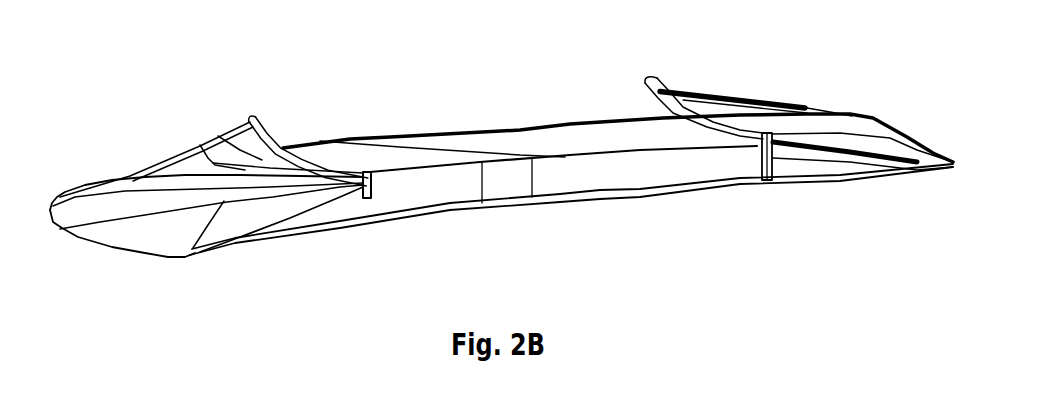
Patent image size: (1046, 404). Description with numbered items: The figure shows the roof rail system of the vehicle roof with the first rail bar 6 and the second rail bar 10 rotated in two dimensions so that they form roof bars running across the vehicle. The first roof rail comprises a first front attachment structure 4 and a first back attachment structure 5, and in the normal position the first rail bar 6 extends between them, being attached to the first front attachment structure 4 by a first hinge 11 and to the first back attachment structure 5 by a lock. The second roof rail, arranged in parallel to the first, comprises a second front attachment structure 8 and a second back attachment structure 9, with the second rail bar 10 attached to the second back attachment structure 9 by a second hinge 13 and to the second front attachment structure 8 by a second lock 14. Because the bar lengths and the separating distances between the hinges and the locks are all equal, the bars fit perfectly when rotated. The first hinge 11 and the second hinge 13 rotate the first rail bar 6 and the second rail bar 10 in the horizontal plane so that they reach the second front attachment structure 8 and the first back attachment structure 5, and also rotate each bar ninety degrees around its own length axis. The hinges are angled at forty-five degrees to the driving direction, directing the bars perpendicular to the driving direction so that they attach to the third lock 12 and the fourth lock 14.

The first front attachment structure 4 is at (347, 213).
The first back attachment structure 5 is at (813, 165).
The first rail bar 6 is at (266, 140).
The second front attachment structure 8 is at (210, 158).
The second back attachment structure 9 is at (703, 110).
The second rail bar 10 is at (700, 111).
The first hinge 11 is at (367, 188).
The third lock 12 is at (768, 162).
The second hinge 13 is at (645, 100).
The second lock 14 is at (228, 131).